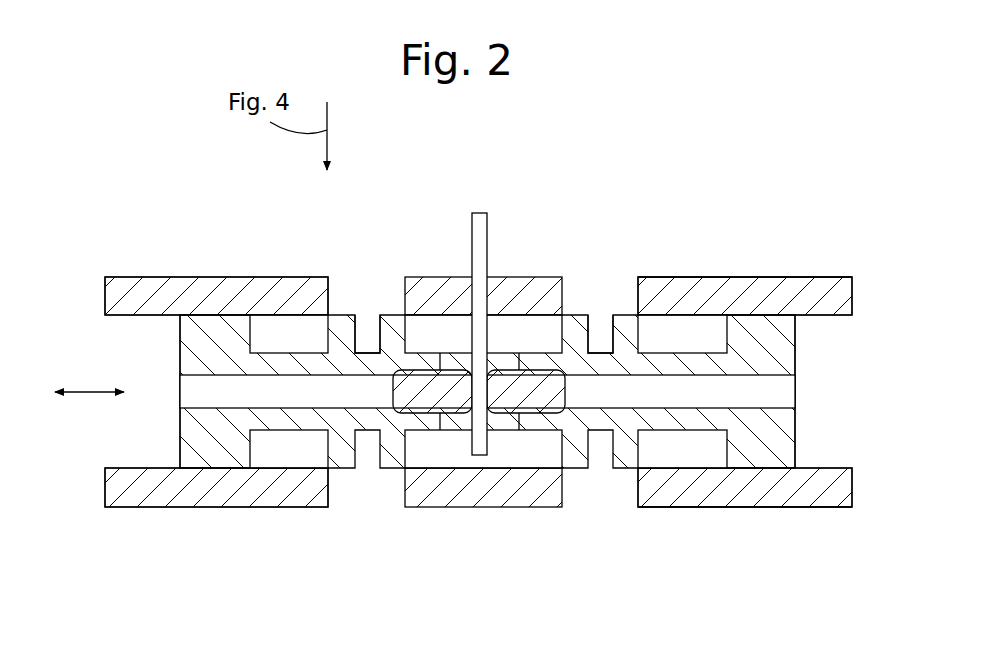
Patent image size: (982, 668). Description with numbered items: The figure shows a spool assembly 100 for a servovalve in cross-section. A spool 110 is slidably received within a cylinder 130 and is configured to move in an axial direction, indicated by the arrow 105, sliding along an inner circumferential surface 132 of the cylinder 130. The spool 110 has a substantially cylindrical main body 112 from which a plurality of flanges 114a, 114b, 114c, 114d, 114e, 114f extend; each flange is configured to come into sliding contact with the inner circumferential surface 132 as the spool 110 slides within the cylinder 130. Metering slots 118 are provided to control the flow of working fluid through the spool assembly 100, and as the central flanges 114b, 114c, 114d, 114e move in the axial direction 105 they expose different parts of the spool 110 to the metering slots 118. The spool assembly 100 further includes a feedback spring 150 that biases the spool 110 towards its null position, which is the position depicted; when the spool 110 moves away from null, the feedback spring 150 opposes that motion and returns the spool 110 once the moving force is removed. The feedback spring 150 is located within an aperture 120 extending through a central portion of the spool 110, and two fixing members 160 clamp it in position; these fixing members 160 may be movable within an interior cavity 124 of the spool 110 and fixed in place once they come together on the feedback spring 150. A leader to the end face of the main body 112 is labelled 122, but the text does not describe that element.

The spool assembly 100 is at (150, 204).
The arrow indicating axial direction 105 is at (92, 395).
The spool 110 is at (782, 338).
The main body 112 is at (267, 423).
The flange 114a is at (192, 457).
The flange 114b is at (338, 463).
The flange 114c is at (395, 463).
The flange 114d is at (577, 462).
The flange 114e is at (635, 457).
The flange 114f is at (762, 462).
The metering slots 118 is at (346, 272).
The aperture 120 is at (455, 430).
The front face 122 is at (180, 348).
The interior cavity 124 is at (777, 387).
The cylinder 130 is at (812, 282).
The inner circumferential surface 132 is at (827, 468).
The feedback spring 150 is at (487, 233).
The fixing members 160 is at (435, 385).